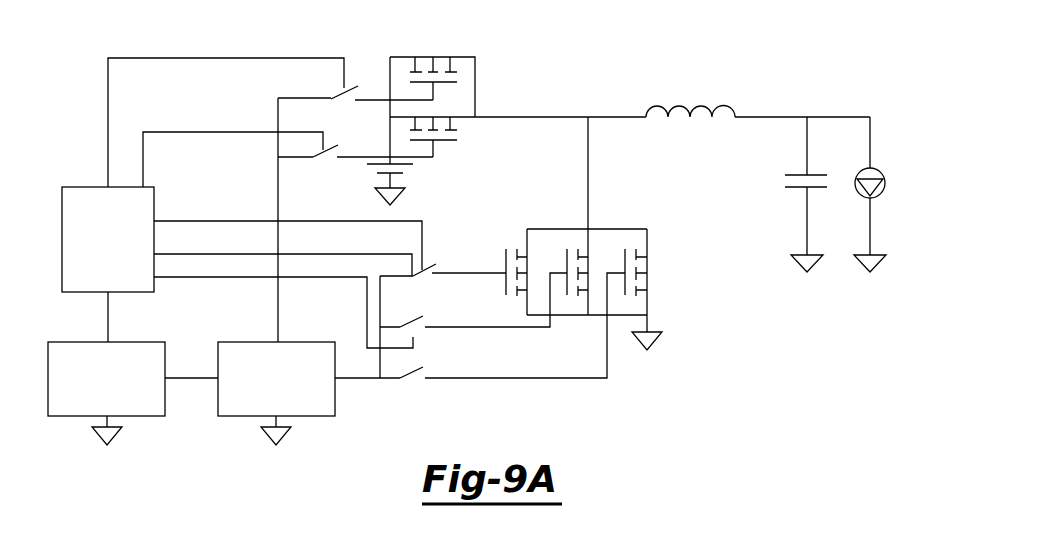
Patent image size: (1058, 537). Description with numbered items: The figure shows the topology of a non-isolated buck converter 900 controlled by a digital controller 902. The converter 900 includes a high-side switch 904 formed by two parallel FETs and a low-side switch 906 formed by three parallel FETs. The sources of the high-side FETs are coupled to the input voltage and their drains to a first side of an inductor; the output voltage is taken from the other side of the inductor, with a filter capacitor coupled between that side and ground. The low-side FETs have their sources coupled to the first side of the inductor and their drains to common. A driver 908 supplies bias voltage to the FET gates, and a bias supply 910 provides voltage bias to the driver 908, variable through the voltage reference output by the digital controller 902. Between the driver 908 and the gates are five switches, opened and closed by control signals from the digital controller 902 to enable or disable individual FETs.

The buck converter 900 is at (768, 78).
The digital controller 902 is at (155, 188).
The high-side switch 904 is at (482, 45).
The low-side switch 906 is at (634, 373).
The driver 908 is at (335, 395).
The bias supply 910 is at (166, 343).